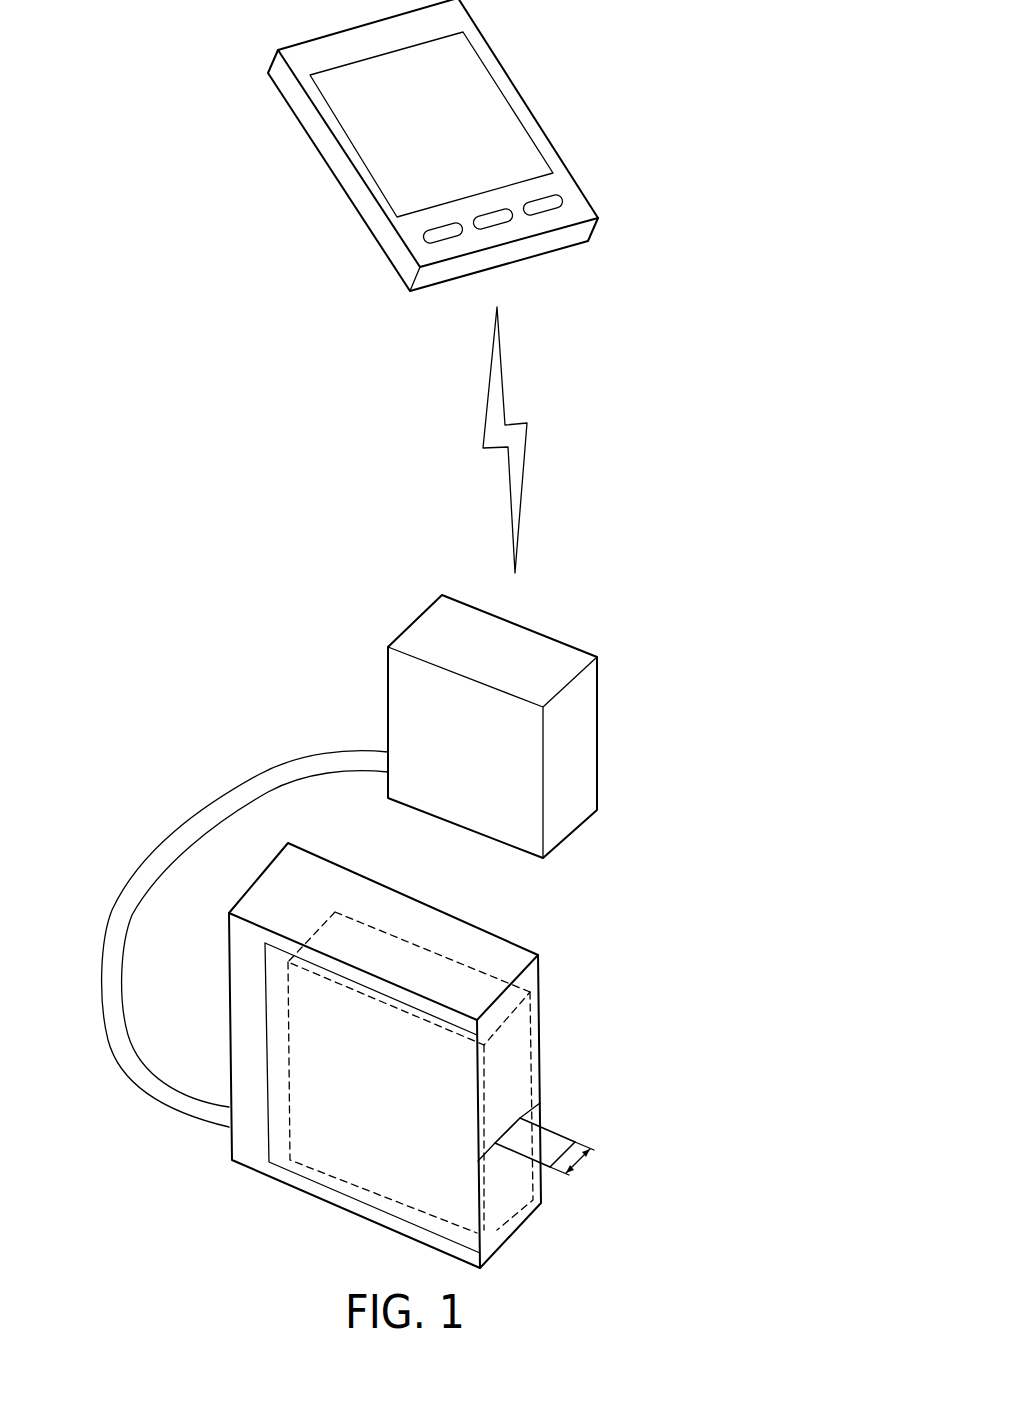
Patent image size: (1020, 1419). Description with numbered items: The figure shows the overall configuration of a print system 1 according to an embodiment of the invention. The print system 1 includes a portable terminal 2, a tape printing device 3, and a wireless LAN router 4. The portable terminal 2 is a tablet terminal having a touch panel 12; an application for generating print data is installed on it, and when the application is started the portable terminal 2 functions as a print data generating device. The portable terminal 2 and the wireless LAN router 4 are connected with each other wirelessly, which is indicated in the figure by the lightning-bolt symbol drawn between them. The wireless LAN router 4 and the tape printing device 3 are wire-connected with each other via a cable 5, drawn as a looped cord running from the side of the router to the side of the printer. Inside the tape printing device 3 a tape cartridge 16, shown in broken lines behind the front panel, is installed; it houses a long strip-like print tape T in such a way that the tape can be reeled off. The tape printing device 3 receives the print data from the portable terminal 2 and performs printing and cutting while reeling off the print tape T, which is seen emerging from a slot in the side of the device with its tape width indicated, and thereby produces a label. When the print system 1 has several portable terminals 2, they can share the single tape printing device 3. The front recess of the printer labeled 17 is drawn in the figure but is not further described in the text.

The print system 1 is at (726, 50).
The portable terminal 2 is at (557, 73).
The touch panel 12 is at (527, 146).
The wireless LAN router 4 is at (530, 639).
The cable 5 is at (180, 843).
The tape printing device 3 is at (590, 962).
The tape cartridge 16 is at (427, 950).
The cover 17 is at (277, 1145).
The print tape T is at (553, 1137).